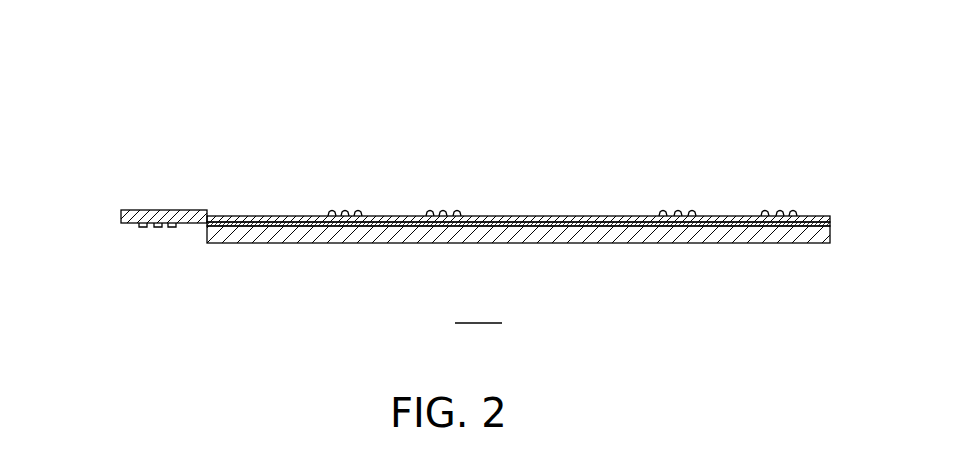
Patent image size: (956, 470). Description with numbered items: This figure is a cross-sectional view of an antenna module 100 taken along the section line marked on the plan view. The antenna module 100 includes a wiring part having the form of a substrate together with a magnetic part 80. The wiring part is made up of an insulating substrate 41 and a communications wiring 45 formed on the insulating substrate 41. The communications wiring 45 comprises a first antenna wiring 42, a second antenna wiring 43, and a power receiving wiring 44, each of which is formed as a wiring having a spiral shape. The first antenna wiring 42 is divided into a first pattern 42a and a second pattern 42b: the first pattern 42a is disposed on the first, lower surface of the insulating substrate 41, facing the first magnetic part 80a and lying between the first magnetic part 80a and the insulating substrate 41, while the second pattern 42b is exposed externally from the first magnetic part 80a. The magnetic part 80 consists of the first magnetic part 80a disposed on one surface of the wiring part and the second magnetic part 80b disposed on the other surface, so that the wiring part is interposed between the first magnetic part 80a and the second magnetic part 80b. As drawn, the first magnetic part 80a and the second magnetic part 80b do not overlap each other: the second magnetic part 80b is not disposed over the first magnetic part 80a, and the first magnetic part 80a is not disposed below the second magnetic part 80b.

The antenna module 100 is at (502, 56).
The insulating substrate 41 is at (600, 215).
The first antenna wiring 42 is at (176, 210).
The first pattern 42a is at (225, 243).
The second pattern 42b is at (158, 224).
The second antenna wiring 43 is at (377, 215).
The power receiving wiring 44 is at (478, 215).
The communications wiring 45 is at (485, 151).
The magnetic part 80 is at (257, 322).
The first magnetic part 80a is at (253, 243).
The second magnetic part 80b is at (119, 217).